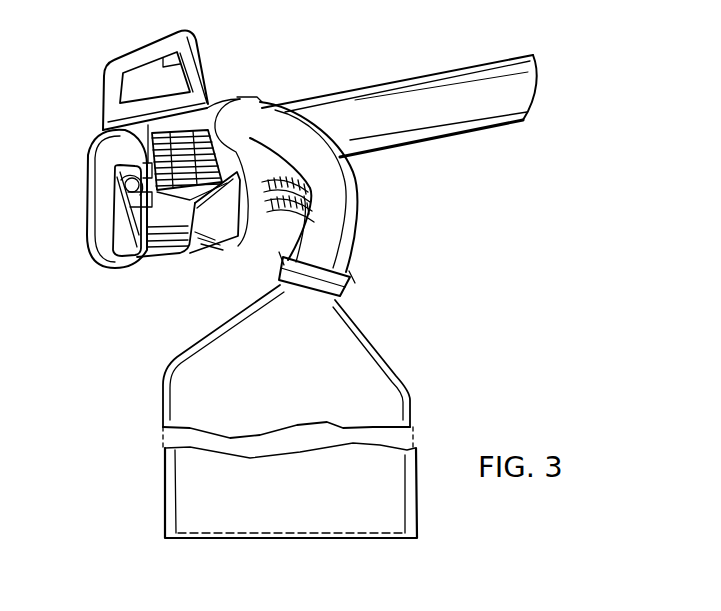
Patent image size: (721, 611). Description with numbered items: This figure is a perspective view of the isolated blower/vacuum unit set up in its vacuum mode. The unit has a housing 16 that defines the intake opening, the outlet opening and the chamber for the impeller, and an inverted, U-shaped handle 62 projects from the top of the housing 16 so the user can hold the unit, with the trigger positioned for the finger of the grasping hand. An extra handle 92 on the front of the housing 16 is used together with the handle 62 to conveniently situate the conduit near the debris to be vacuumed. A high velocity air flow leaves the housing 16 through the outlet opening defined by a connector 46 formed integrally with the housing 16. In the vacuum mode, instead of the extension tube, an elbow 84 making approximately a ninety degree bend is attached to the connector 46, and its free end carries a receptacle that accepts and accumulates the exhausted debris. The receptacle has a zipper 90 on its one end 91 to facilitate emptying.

The handle 62 is at (143, 53).
The housing 16 is at (220, 240).
The extra handle 92 is at (97, 230).
The connector 46 is at (233, 98).
The elbow 84 is at (340, 193).
The zipper 90 is at (190, 542).
The one end 91 is at (387, 498).